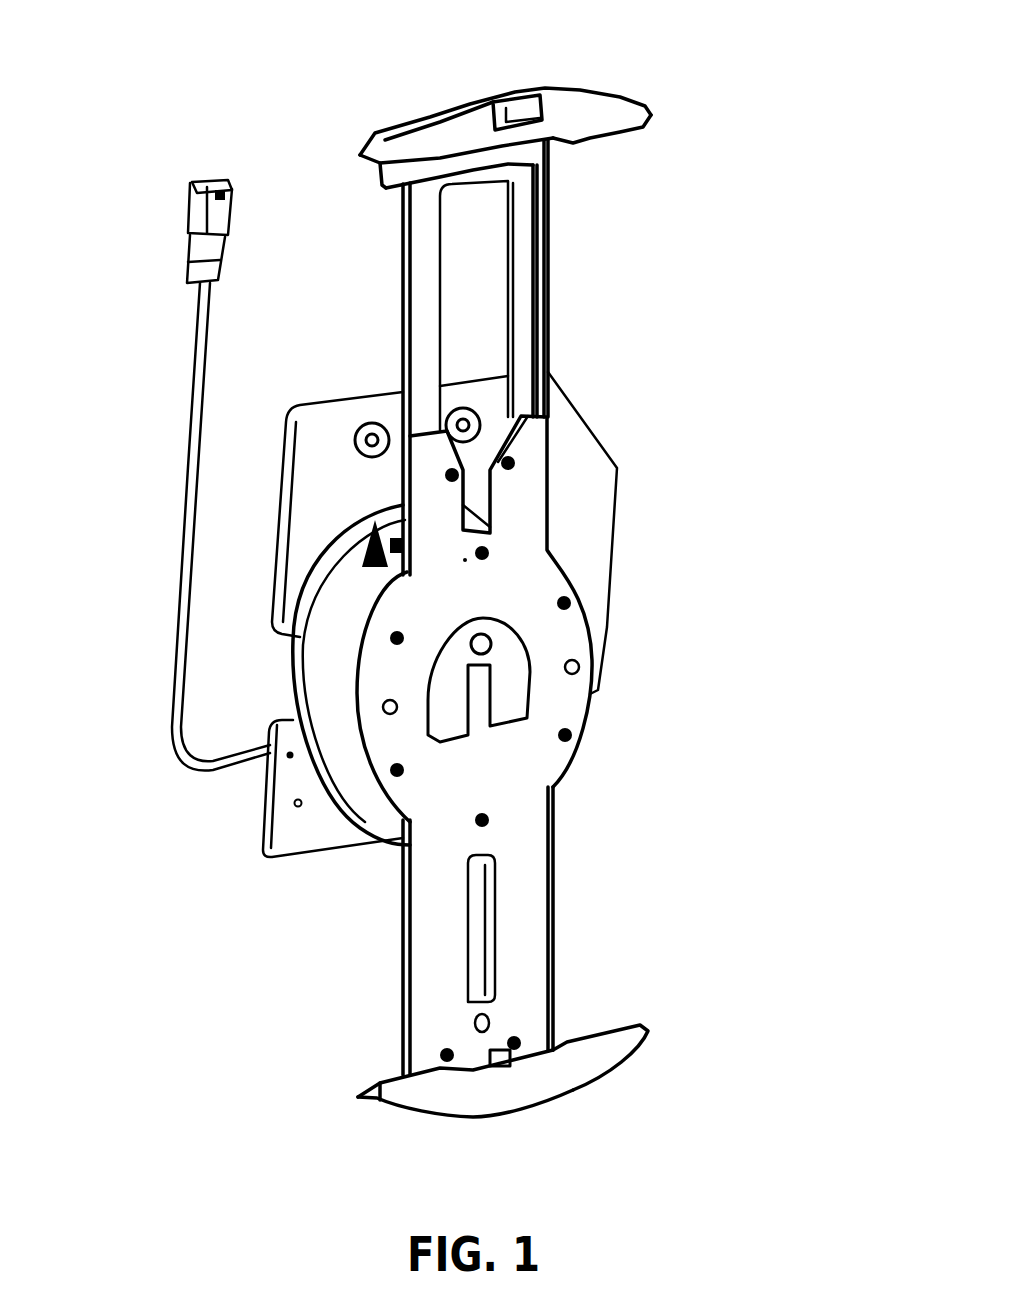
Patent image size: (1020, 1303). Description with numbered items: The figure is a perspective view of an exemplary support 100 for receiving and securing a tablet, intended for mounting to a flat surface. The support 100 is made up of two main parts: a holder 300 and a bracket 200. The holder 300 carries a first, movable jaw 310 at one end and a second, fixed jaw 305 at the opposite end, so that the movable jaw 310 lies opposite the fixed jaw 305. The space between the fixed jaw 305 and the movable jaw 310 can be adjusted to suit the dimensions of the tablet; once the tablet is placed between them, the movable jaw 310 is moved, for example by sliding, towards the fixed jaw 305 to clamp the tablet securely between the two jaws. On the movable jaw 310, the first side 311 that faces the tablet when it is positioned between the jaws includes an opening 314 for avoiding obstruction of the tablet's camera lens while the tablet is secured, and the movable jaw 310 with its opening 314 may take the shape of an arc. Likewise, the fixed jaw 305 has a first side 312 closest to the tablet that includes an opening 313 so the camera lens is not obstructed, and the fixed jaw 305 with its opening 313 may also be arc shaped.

The support 100 is at (806, 128).
The bracket 200 is at (323, 667).
The holder 300 is at (565, 703).
The fixed jaw 305 is at (447, 1097).
The movable jaw 310 is at (574, 115).
The first side 311 is at (615, 142).
The first side 312 is at (617, 1028).
The opening 313 is at (520, 1068).
The opening 314 is at (487, 153).